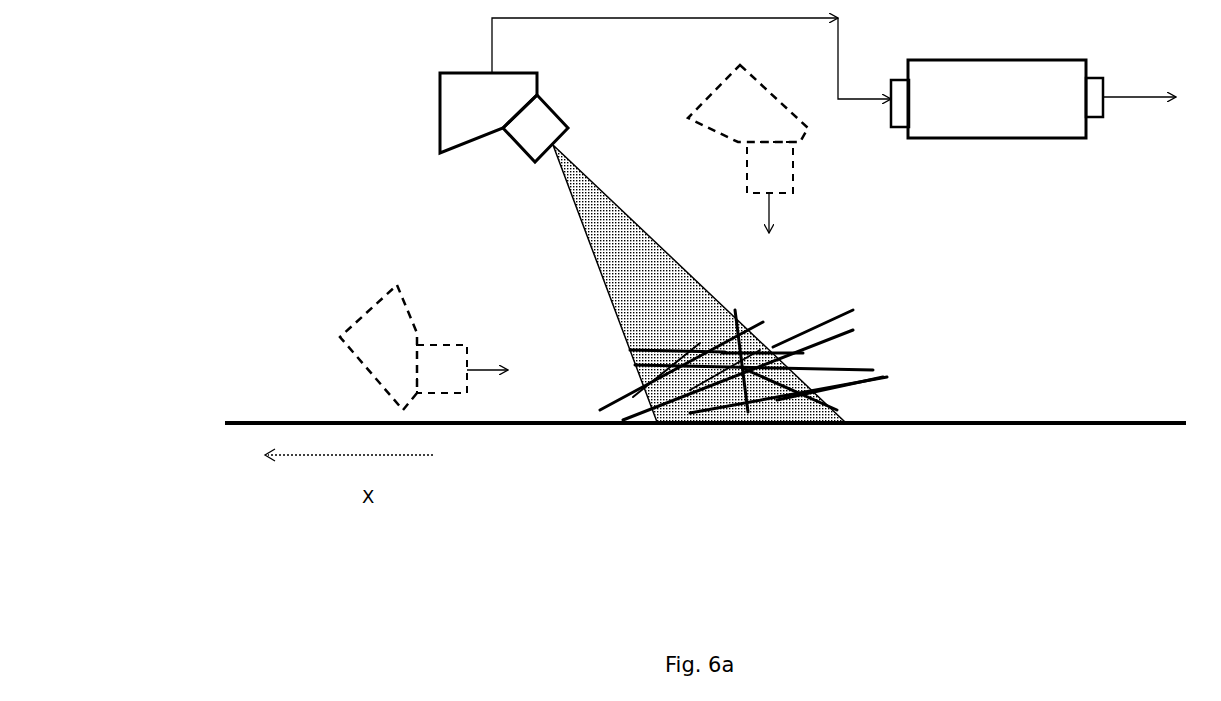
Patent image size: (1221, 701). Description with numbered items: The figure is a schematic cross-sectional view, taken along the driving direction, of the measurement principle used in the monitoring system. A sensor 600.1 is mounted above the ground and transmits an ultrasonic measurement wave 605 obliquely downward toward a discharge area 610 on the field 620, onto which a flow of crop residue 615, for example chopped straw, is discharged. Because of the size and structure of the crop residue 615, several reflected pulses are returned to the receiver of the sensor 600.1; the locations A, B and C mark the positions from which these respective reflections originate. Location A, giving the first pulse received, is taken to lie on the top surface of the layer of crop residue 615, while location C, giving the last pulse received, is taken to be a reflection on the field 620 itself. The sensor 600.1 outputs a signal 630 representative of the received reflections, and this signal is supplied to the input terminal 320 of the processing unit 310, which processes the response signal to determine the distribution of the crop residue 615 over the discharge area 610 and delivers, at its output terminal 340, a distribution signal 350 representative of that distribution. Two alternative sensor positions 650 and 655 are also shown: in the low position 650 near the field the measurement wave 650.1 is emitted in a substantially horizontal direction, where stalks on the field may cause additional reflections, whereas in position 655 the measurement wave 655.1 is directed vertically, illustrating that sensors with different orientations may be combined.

The sensor 600.1 is at (460, 98).
The measurement wave 605 is at (603, 227).
The discharge area 610 is at (876, 274).
The crop residue 615 is at (640, 413).
The field 620 is at (1100, 422).
The signal 630 is at (667, 20).
The sensor position 650 is at (375, 337).
The measurement wave 650.1 is at (510, 308).
The sensor position 655 is at (820, 60).
The measurement wave 655.1 is at (772, 207).
The processing unit 310 is at (1012, 60).
The input terminal 320 is at (900, 92).
The output terminal 340 is at (1103, 80).
The distribution signal 350 is at (1128, 97).
The reflection location A is at (693, 340).
The reflection location B is at (777, 357).
The reflection location C is at (763, 423).